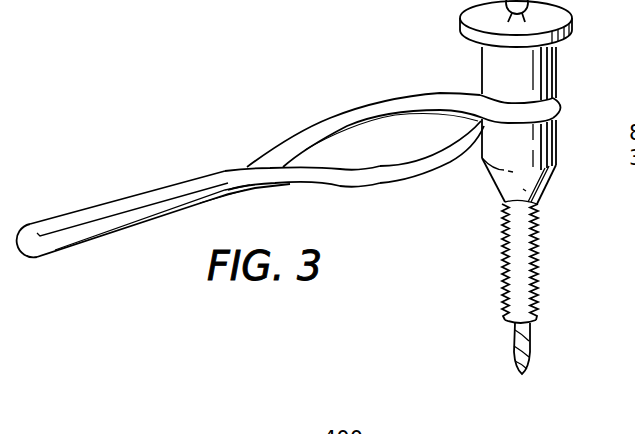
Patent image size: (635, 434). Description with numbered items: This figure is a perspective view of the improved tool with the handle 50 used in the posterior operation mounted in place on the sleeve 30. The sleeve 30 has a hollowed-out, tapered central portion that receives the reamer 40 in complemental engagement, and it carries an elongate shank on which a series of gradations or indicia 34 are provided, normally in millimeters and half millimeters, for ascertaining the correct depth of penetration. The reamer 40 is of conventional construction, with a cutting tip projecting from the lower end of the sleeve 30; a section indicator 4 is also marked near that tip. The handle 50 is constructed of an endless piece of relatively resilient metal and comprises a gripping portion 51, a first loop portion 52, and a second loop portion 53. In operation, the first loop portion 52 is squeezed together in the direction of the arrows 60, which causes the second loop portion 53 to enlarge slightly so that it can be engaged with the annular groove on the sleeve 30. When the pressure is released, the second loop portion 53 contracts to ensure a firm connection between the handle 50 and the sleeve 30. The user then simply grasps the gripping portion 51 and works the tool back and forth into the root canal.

The sleeve 30 is at (550, 58).
The gradations or indicia 34 is at (538, 268).
The reamer 40 is at (525, 360).
The section line for FIG. 4 is at (522, 405).
The handle 50 is at (209, 156).
The gripping portion 51 is at (145, 213).
The first loop portion 52 is at (345, 182).
The second loop portion 53 is at (565, 126).
The arrows 60 is at (338, 96).